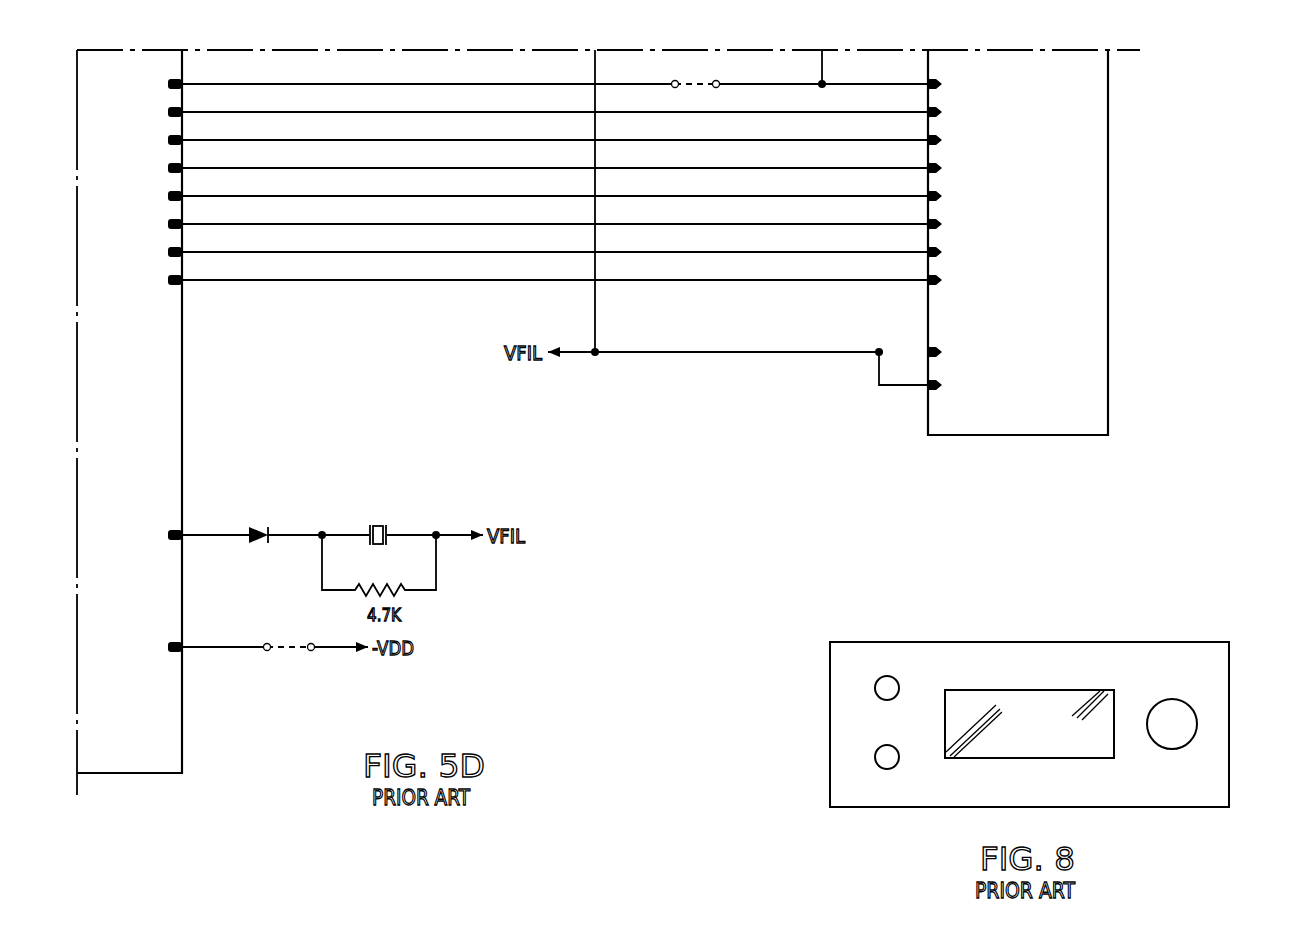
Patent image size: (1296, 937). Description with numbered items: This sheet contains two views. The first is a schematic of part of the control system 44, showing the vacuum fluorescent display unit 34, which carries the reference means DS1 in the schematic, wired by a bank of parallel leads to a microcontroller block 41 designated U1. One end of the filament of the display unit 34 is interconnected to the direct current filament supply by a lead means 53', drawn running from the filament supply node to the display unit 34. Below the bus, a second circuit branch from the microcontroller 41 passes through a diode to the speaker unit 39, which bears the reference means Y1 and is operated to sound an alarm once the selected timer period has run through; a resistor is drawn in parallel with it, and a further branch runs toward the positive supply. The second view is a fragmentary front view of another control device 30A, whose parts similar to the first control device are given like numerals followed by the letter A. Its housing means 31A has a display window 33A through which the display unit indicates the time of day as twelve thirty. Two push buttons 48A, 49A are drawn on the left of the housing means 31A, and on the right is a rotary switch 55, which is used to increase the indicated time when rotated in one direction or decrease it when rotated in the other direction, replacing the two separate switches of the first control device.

In FIG. 5D, the display module circuit 44 is at (1160, 80).
In FIG. 5D, the vacuum fluorescent display unit 34 is at (1109, 220).
In FIG. 5D, the vacuum fluorescent display unit DS1 is at (1109, 290).
In FIG. 5D, the microcontroller U1 41 is at (165, 412).
In FIG. 5D, the microcontroller U1 is at (182, 720).
In FIG. 5D, the speaker unit 39 is at (386, 531).
In FIG. 5D, the speaker unit Y1 is at (378, 524).
In FIG. 5D, the lead means 53' is at (738, 385).
In FIG. 8, the control device 30A is at (1097, 619).
In FIG. 8, the housing means 31A is at (1125, 642).
In FIG. 8, the display window 33A is at (1003, 690).
In FIG. 8, the push button 48A is at (874, 690).
In FIG. 8, the push button 49A is at (874, 757).
In FIG. 8, the rotary switch 55 is at (1188, 723).